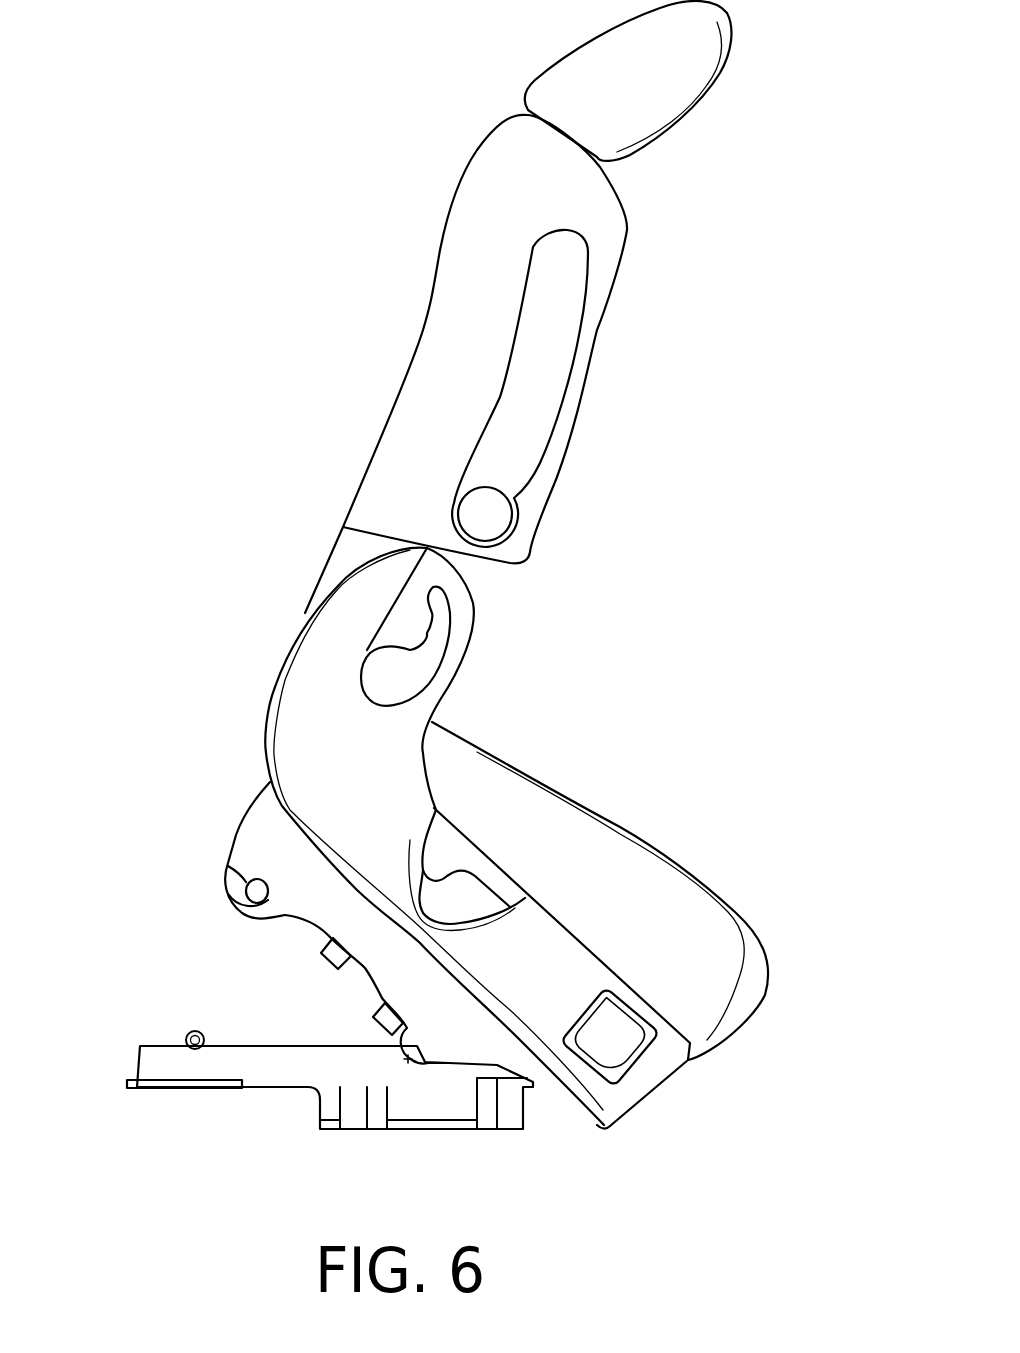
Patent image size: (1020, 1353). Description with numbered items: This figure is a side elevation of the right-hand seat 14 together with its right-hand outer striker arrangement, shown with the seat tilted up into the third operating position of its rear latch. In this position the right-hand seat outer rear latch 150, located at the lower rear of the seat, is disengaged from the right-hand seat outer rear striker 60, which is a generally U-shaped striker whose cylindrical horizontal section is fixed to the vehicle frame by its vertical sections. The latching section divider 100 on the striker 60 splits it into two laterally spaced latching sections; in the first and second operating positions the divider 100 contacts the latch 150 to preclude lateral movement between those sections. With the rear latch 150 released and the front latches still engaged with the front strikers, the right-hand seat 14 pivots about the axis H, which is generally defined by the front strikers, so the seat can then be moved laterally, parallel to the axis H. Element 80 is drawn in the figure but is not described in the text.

The right-hand seat 14 is at (634, 644).
The right-hand seat outer rear latch 150 is at (208, 900).
The latching section divider 100 is at (197, 1030).
The right-hand seat outer rear striker 60 is at (177, 1038).
The base lower housing 80 is at (288, 1078).
The axis H is at (413, 1064).